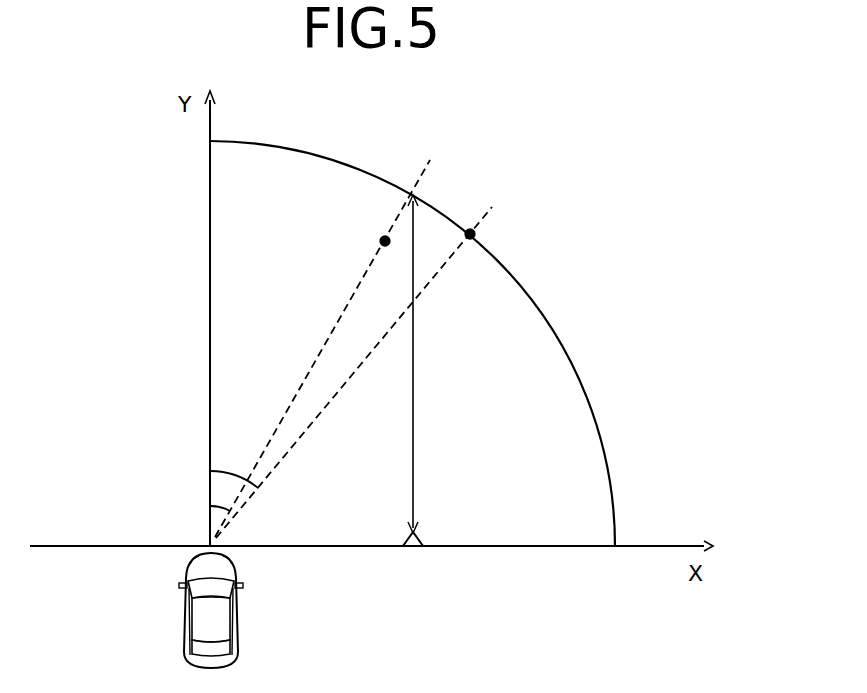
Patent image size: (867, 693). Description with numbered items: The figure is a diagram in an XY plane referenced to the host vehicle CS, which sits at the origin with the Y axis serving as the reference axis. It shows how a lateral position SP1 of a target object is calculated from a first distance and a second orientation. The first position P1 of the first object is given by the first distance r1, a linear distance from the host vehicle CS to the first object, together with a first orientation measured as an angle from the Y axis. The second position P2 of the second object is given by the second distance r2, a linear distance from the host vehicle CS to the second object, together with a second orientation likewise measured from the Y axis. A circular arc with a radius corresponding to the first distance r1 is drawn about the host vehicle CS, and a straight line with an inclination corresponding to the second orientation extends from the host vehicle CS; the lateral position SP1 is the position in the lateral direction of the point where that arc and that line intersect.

The first position P1 is at (474, 234).
The second position P2 is at (381, 240).
The first distance r1 is at (354, 372).
The second distance r2 is at (322, 348).
The lateral position SP1 is at (413, 549).
The host vehicle CS is at (238, 614).